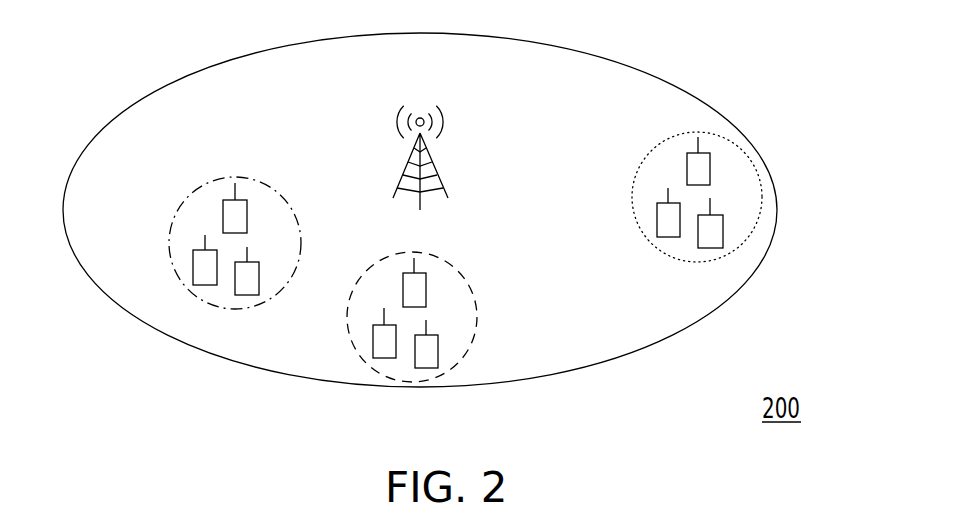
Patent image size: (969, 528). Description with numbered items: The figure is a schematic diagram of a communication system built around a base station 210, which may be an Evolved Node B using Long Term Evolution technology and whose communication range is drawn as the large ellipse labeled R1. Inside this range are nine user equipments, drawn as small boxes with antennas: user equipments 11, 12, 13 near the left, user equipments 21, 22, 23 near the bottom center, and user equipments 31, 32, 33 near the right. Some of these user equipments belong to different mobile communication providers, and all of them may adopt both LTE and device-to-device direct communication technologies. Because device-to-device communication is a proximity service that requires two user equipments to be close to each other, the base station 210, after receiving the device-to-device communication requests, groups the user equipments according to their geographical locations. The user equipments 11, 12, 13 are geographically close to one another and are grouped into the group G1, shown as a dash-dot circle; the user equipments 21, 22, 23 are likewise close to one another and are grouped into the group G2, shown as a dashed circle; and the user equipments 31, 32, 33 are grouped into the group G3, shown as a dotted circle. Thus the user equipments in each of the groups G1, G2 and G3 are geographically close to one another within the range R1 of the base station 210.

The communication range R1 is at (663, 78).
The base station 210 is at (437, 170).
The group G1 is at (299, 228).
The user equipment 11 is at (223, 210).
The user equipment 12 is at (193, 268).
The user equipment 13 is at (259, 283).
The group G2 is at (476, 295).
The user equipment 21 is at (426, 282).
The user equipment 22 is at (373, 351).
The user equipment 23 is at (438, 357).
The group G3 is at (662, 132).
The user equipment 31 is at (687, 160).
The user equipment 32 is at (657, 225).
The user equipment 33 is at (723, 237).